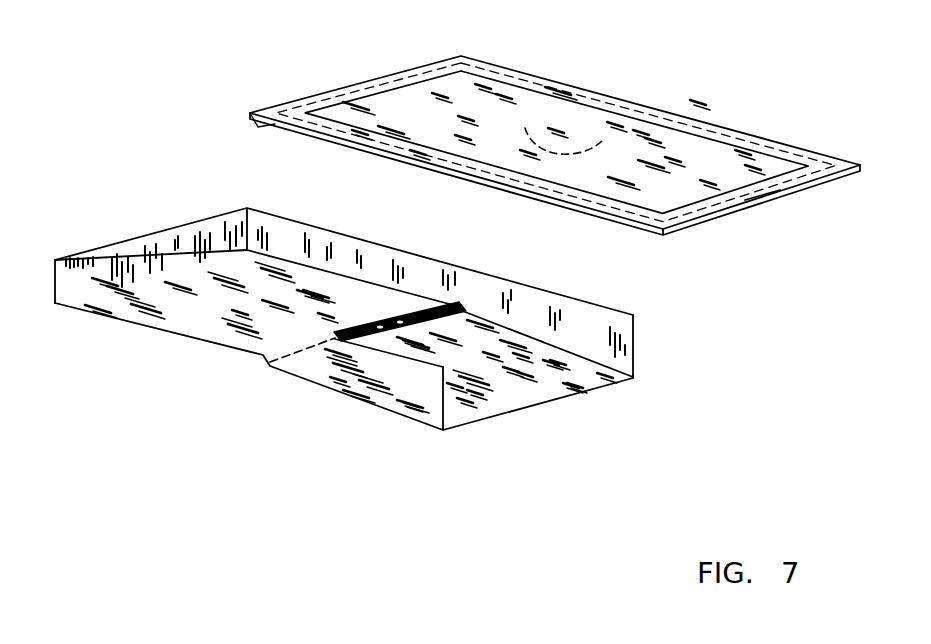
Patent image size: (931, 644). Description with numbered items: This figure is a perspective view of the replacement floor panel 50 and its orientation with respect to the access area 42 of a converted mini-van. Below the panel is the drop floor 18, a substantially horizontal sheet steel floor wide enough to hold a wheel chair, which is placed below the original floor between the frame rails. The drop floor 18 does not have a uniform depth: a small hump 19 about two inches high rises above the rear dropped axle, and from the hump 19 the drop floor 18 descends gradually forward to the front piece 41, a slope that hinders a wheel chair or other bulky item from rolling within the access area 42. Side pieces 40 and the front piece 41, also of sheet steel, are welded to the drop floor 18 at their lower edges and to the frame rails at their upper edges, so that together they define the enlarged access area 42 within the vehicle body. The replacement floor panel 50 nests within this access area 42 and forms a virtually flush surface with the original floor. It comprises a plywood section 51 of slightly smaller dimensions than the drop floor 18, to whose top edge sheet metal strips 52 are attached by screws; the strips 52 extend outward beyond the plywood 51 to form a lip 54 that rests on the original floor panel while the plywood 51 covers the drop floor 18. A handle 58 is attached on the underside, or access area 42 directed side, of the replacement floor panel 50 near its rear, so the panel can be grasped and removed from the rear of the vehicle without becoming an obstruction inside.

The drop floor 18 is at (492, 380).
The hump 19 is at (465, 306).
The side pieces 40 is at (398, 389).
The front piece 41 is at (158, 263).
The access area 42 is at (119, 225).
The replacement floor panel 50 is at (672, 68).
The plywood section 51 is at (687, 222).
The sheet metal strips 52 is at (482, 63).
The lip 54 is at (258, 122).
The handle 58 is at (600, 143).